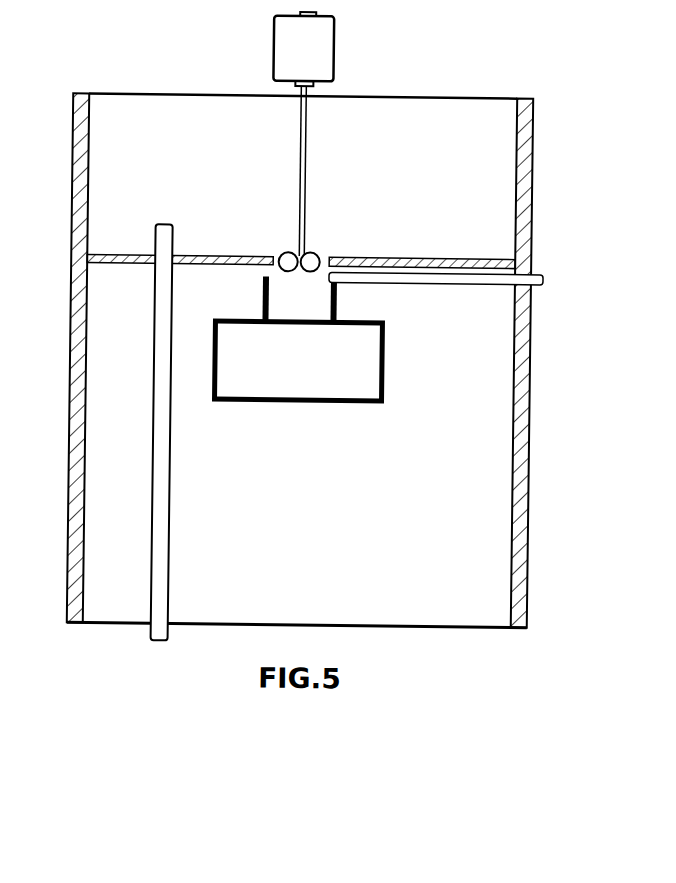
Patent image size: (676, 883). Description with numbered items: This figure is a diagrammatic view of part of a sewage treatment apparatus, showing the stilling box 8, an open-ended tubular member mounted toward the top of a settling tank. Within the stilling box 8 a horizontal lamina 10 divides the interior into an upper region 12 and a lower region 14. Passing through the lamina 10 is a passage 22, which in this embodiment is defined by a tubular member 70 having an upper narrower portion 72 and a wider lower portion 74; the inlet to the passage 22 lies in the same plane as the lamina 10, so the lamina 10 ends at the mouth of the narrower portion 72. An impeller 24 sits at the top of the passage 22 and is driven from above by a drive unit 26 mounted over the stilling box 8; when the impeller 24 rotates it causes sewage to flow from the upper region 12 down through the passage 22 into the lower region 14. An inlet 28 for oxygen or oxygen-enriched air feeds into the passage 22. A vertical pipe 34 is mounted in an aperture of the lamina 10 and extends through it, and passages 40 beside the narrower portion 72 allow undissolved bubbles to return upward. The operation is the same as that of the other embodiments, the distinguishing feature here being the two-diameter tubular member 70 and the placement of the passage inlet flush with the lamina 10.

The stilling box 8 is at (530, 596).
The lamina 10 is at (443, 256).
The upper region 12 is at (100, 192).
The lower region 14 is at (95, 460).
The passage 22 is at (298, 373).
The impeller 24 is at (314, 255).
The motor / drive unit 26 is at (320, 52).
The inlet 28 is at (540, 285).
The vertical pipe 34 is at (160, 542).
The passages 40 is at (266, 270).
The tubular member 70 is at (327, 361).
The upper narrower portion 72 is at (312, 297).
The wider lower portion 74 is at (358, 378).